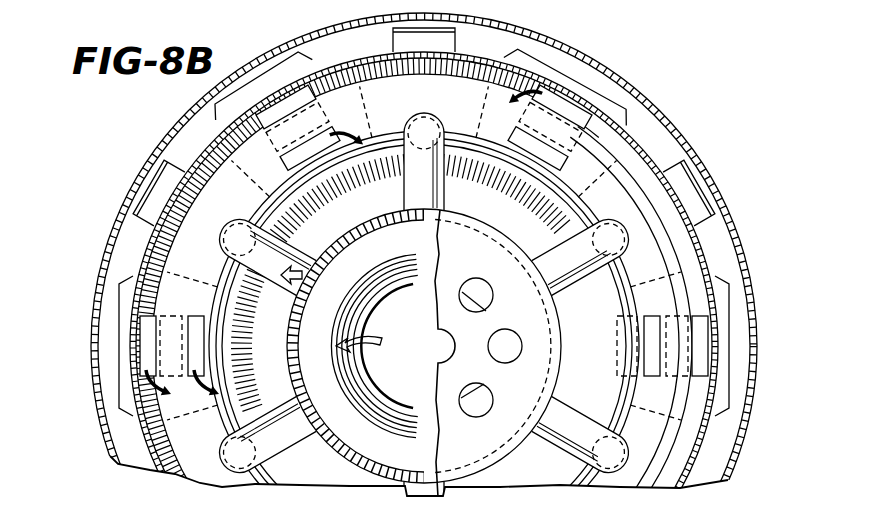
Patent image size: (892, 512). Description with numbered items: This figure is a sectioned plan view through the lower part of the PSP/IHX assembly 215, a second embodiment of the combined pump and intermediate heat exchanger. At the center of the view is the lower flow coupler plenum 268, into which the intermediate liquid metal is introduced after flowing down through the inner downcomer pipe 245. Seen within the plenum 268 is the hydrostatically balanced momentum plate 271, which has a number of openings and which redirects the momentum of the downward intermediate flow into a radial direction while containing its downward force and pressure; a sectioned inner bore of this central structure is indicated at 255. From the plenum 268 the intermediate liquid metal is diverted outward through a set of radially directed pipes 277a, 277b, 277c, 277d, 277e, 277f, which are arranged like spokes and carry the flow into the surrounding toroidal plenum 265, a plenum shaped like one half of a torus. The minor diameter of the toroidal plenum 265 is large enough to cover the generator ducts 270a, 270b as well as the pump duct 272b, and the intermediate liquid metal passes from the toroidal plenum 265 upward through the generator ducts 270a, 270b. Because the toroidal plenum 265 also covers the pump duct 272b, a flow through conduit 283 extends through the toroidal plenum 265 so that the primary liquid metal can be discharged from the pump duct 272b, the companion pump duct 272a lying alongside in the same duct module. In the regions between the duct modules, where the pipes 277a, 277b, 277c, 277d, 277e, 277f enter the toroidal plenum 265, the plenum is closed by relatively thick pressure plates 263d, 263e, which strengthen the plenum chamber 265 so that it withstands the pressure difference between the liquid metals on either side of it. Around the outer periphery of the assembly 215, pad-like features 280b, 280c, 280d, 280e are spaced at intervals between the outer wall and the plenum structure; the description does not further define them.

The PSP/IHX assembly 215 is at (625, 61).
The inner downcomer pipe 245 is at (695, 165).
The hub bore grooves 255 is at (388, 289).
The pressure plate 263d is at (368, 108).
The pressure plate 263e is at (602, 184).
The toroidal plenum 265 is at (372, 78).
The flow coupler plenum 268 is at (495, 228).
The generator duct 270a is at (172, 318).
The generator duct 270b is at (228, 384).
The momentum plate 271 is at (432, 381).
The pump duct 272a is at (147, 341).
The pump duct 272b is at (197, 353).
The pipe 277a is at (490, 477).
The pipe 277b is at (305, 441).
The pipe 277c is at (287, 241).
The pipe 277d is at (441, 191).
The pipe 277e is at (586, 279).
The pipe 277f is at (585, 415).
The lug 280b is at (123, 413).
The lug 280c is at (299, 43).
The lug 280d is at (613, 104).
The lug 280e is at (729, 321).
The flow through conduit 283 is at (188, 349).